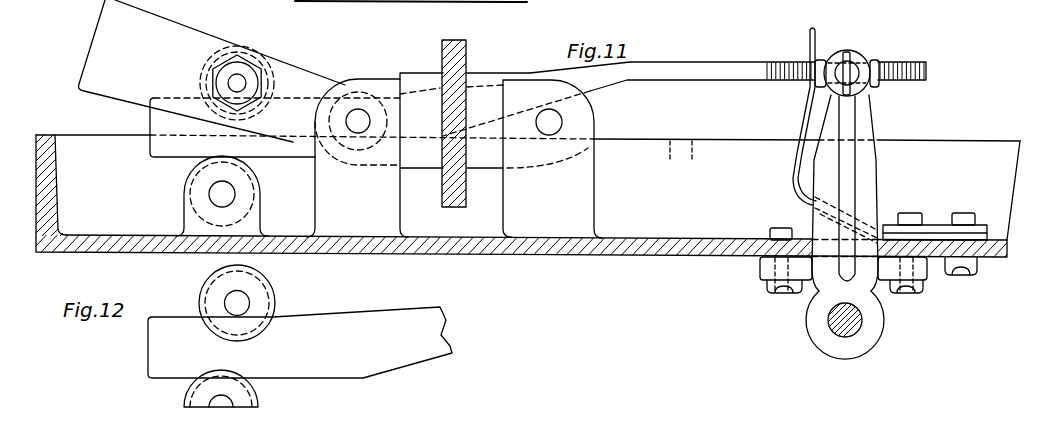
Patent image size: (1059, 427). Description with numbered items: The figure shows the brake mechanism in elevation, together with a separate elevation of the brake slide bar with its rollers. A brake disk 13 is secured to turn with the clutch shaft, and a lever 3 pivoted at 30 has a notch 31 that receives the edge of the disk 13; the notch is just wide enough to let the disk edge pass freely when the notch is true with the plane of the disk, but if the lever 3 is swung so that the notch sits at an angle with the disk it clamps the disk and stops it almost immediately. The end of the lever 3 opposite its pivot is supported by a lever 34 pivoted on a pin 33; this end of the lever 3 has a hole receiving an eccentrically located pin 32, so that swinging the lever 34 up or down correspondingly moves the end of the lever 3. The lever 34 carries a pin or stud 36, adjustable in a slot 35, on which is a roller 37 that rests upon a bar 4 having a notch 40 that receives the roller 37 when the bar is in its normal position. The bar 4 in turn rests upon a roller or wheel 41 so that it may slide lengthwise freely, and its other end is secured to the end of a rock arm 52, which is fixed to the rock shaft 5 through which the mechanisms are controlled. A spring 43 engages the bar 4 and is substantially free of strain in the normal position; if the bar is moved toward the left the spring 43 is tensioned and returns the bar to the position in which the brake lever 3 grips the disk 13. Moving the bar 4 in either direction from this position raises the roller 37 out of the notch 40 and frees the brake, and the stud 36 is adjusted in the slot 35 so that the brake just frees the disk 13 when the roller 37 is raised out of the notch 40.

In FIG. 11, the lever 3 is at (400, 72).
In FIG. 11, the bar 4 is at (150, 121).
In FIG. 12, the bar 4 is at (300, 342).
In FIG. 11, the rock shaft 5 is at (864, 321).
In FIG. 11, the brake disk 13 is at (467, 62).
In FIG. 11, the pivot 30 is at (562, 120).
In FIG. 11, the notch 31 is at (437, 86).
In FIG. 11, the eccentrically located pin 32 is at (336, 95).
In FIG. 11, the pin 33 is at (357, 108).
In FIG. 11, the lever 34 is at (212, 71).
In FIG. 11, the slot 35 is at (228, 58).
In FIG. 11, the pin or stud 36 is at (228, 83).
In FIG. 11, the roller 37 is at (259, 60).
In FIG. 12, the roller 37 is at (273, 297).
In FIG. 11, the notch 40 is at (270, 102).
In FIG. 12, the notch 40 is at (225, 333).
In FIG. 11, the roller or wheel 41 is at (185, 185).
In FIG. 12, the roller or wheel 41 is at (188, 397).
In FIG. 11, the spring 43 is at (794, 176).
In FIG. 11, the rock arm 52 is at (876, 126).